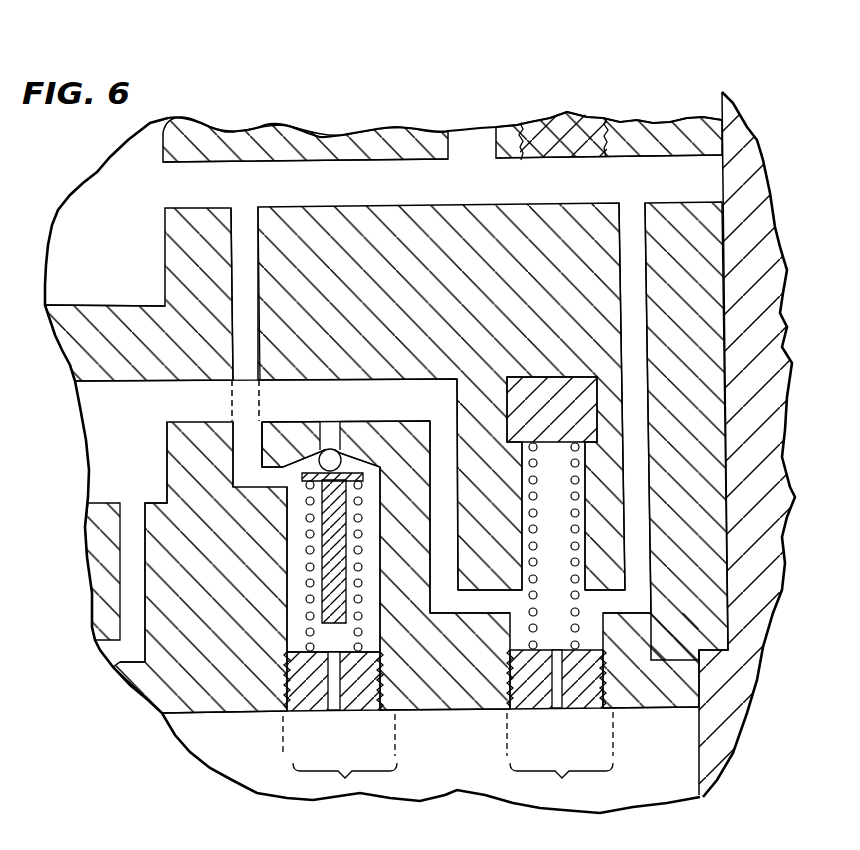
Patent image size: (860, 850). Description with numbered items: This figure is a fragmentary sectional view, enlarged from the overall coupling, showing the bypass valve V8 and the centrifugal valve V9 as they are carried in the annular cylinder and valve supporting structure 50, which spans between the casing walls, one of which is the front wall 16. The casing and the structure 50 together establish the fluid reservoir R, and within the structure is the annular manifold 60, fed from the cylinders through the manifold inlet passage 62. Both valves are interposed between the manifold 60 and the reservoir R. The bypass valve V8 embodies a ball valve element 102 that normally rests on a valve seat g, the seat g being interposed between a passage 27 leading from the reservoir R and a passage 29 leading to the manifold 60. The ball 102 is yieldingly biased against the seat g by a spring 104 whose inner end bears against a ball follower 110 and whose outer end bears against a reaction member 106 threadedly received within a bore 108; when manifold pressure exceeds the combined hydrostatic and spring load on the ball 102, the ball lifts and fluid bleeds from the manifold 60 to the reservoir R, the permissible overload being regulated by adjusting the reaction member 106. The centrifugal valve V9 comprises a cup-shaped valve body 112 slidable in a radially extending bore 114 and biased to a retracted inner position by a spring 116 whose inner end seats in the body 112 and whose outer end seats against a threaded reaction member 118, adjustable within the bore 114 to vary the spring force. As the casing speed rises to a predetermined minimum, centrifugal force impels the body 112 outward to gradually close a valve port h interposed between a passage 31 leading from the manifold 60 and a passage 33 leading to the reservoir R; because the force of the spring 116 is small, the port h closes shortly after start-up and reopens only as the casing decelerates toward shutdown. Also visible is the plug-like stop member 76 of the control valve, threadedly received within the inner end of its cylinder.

The cylinder and valve supporting structure 50 is at (308, 147).
The passage 27 is at (253, 218).
The stop member 76 is at (562, 140).
The passage 33 is at (641, 221).
The front wall 16 is at (776, 332).
The valve body 112 is at (553, 400).
The manifold 60 is at (145, 453).
The manifold inlet passage 62 is at (122, 560).
The ball valve element 102 is at (322, 435).
The passage 29 is at (334, 450).
The valve seat g is at (345, 458).
The ball follower 110 is at (362, 467).
The passage 31 is at (438, 498).
The spring 104 is at (310, 545).
The bore 108 is at (297, 632).
The reaction member 106 is at (385, 703).
The bore 114 is at (550, 509).
The spring 116 is at (573, 473).
The valve port h is at (600, 598).
The reaction member 118 is at (608, 698).
The bypass valve V8 is at (340, 760).
The centrifugal valve V9 is at (560, 761).
The fluid reservoir R is at (120, 247).